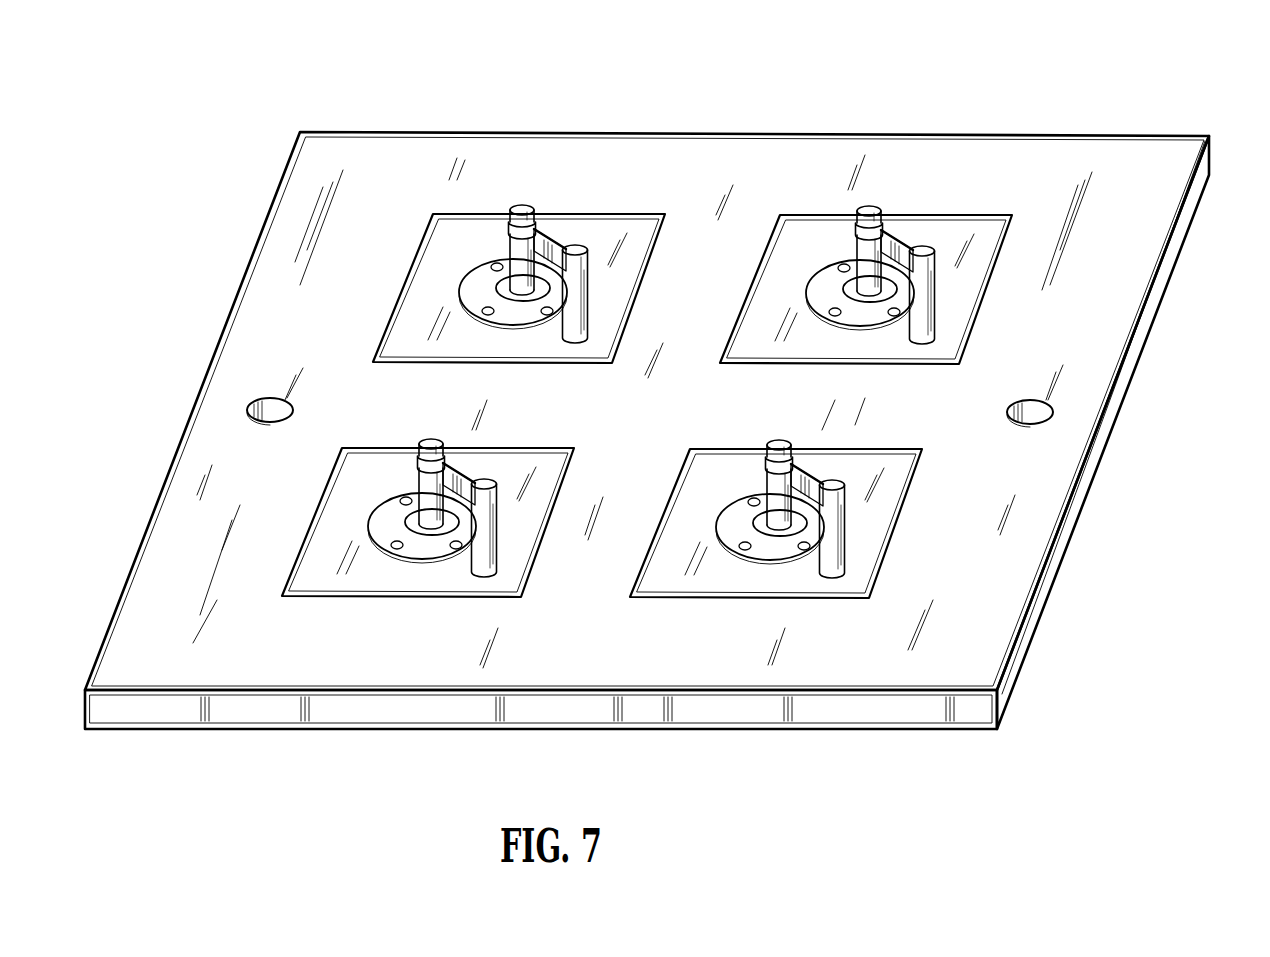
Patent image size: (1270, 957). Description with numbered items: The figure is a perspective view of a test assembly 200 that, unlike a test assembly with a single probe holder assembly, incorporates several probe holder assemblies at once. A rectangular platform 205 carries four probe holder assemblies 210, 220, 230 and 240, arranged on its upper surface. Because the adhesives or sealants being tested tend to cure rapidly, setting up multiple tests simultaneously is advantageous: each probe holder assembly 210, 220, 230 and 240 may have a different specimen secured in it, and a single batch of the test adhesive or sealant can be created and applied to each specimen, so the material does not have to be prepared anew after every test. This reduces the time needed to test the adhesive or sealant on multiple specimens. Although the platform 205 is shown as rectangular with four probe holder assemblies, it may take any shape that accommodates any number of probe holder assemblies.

The test assembly 200 is at (661, 419).
The platform 205 is at (1077, 330).
The probe holder assembly 210 is at (578, 198).
The probe holder assembly 220 is at (918, 198).
The probe holder assembly 230 is at (370, 612).
The probe holder assembly 240 is at (652, 610).